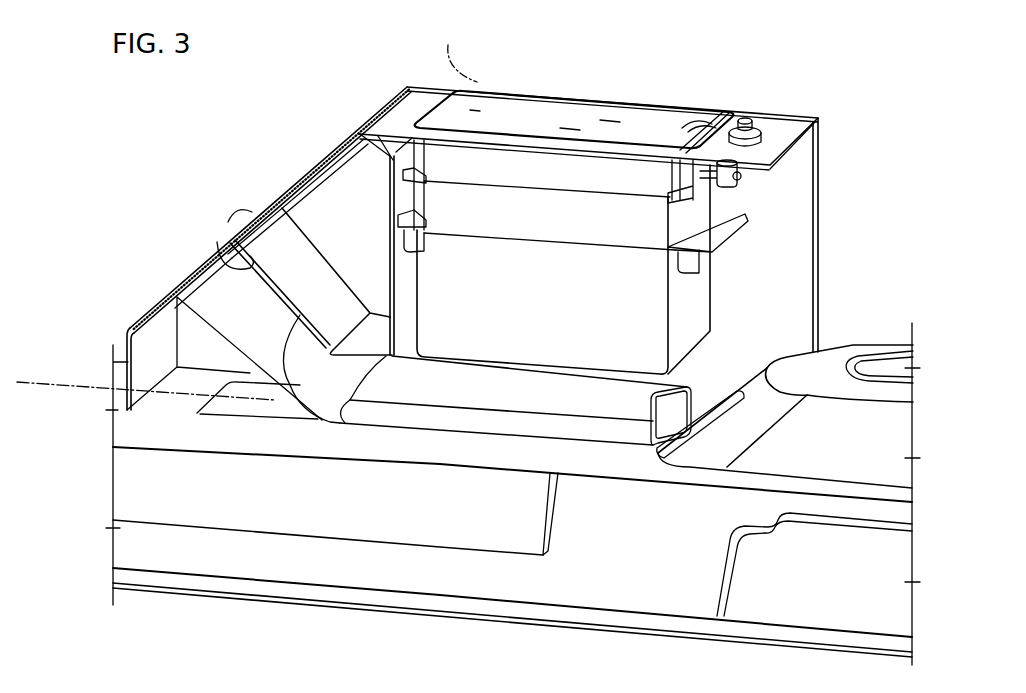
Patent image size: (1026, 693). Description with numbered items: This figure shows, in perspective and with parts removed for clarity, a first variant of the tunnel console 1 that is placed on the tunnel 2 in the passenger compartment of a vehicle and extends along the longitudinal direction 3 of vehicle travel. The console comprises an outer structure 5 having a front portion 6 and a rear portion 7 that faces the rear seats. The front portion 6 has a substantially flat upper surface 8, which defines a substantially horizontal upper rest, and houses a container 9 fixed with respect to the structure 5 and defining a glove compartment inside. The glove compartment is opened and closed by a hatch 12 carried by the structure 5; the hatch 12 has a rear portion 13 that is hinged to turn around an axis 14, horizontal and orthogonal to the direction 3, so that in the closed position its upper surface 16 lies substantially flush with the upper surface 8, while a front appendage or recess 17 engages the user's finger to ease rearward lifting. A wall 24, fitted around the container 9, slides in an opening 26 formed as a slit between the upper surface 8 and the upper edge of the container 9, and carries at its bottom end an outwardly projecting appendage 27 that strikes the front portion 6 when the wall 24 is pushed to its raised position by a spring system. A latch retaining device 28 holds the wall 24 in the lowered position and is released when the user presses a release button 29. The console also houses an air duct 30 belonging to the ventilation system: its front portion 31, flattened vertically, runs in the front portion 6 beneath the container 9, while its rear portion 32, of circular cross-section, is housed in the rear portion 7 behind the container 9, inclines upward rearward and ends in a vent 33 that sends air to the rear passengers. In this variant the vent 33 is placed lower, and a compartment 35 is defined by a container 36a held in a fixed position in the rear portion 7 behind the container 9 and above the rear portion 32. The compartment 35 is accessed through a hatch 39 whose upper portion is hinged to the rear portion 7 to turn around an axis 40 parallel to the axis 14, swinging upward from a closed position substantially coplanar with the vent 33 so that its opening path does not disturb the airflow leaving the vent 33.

The tunnel console 1 is at (233, 153).
The tunnel 2 is at (393, 452).
The longitudinal direction 3 is at (57, 383).
The outer structure 5 is at (815, 110).
The front portion 6 is at (802, 213).
The rear portion 7 is at (140, 323).
The upper surface 8 is at (778, 124).
The container 9 is at (702, 293).
The hatch 12 is at (638, 117).
The rear portion 13 is at (510, 102).
The axis 14 is at (462, 54).
The upper surface 16 is at (595, 115).
The front appendage or recess 17 is at (684, 127).
The wall 24 is at (550, 168).
The opening 26 is at (722, 104).
The appendage 27 is at (400, 166).
The latch retaining device 28 is at (745, 181).
The release button 29 is at (726, 125).
The air duct 30 is at (630, 435).
The front portion 31 is at (598, 404).
The rear portion 32 is at (243, 333).
The vent 33 is at (190, 258).
The compartment 35 is at (306, 217).
The container 36a is at (217, 232).
The hatch 39 is at (317, 157).
The axis 40 is at (427, 82).